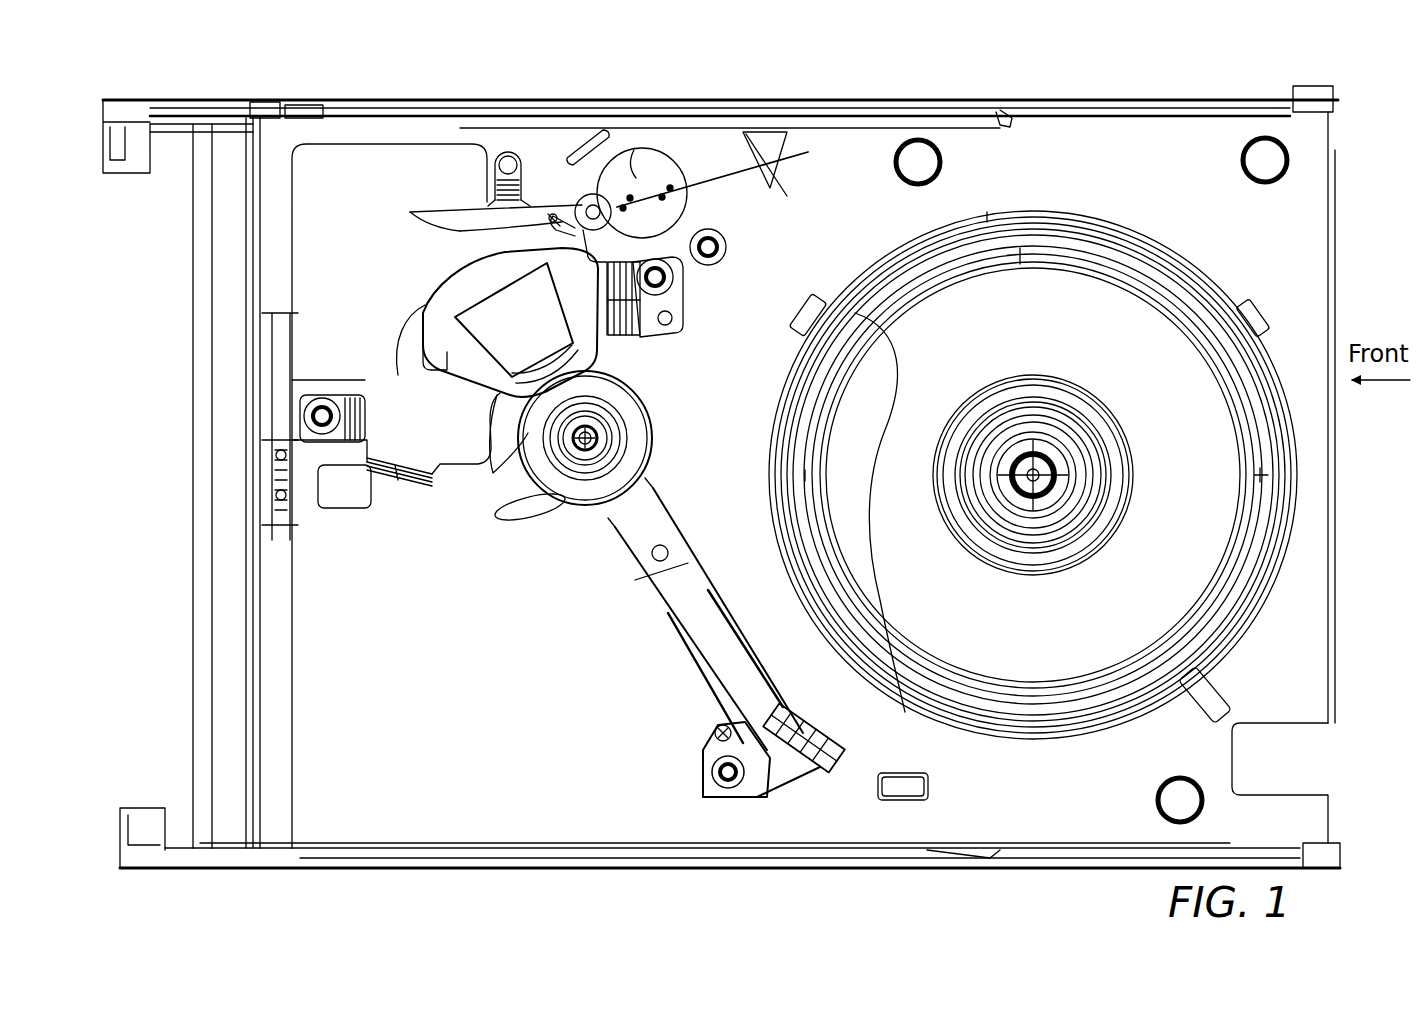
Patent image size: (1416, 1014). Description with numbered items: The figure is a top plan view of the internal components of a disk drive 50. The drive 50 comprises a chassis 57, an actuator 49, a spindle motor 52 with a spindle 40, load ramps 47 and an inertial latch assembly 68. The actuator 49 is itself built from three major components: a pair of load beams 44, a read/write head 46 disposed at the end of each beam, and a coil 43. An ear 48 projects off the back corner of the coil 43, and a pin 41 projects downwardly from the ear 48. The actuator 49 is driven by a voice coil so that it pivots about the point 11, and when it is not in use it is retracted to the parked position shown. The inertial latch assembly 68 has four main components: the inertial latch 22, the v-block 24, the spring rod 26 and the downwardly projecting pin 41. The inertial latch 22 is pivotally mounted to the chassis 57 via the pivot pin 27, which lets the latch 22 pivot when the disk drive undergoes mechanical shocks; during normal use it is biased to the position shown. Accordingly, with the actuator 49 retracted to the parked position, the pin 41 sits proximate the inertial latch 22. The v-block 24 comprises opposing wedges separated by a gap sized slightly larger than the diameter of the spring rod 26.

The pivot point 11 is at (585, 445).
The inertial latch 22 is at (637, 173).
The v-block 24 is at (768, 130).
The spring rod 26 is at (705, 195).
The pivot pin 27 is at (586, 198).
The spindle 40 is at (1127, 442).
The pin 41 is at (490, 195).
The coil 43 is at (494, 326).
The load beams 44 is at (683, 548).
The read/write head 46 is at (807, 777).
The load ramps 47 is at (775, 797).
The ear 48 is at (410, 212).
The actuator 49 is at (648, 432).
The disk drive 50 is at (232, 923).
The spindle motor 52 is at (948, 333).
The chassis 57 is at (677, 138).
The inertial latch assembly 68 is at (723, 200).